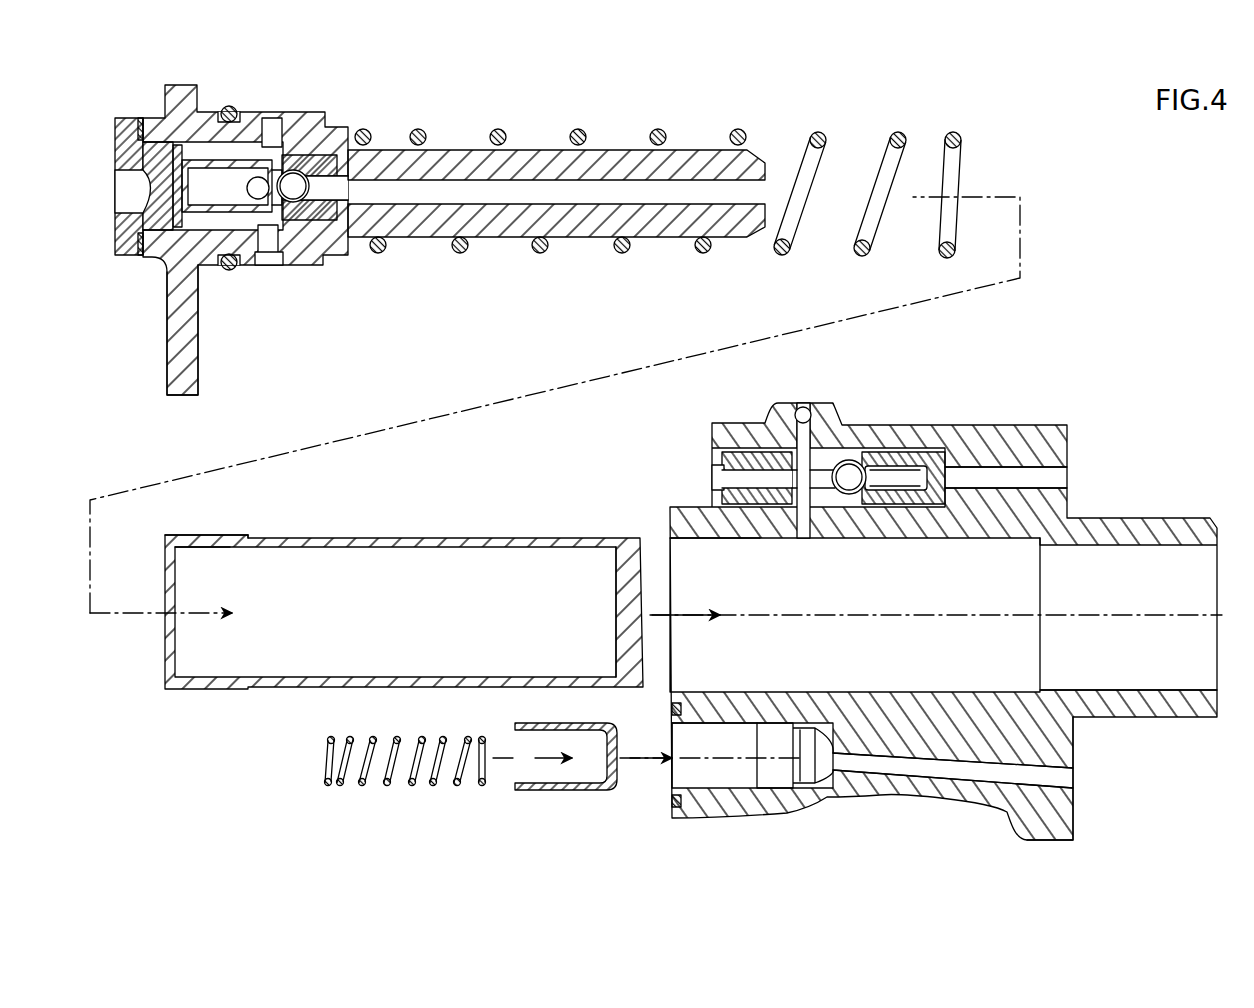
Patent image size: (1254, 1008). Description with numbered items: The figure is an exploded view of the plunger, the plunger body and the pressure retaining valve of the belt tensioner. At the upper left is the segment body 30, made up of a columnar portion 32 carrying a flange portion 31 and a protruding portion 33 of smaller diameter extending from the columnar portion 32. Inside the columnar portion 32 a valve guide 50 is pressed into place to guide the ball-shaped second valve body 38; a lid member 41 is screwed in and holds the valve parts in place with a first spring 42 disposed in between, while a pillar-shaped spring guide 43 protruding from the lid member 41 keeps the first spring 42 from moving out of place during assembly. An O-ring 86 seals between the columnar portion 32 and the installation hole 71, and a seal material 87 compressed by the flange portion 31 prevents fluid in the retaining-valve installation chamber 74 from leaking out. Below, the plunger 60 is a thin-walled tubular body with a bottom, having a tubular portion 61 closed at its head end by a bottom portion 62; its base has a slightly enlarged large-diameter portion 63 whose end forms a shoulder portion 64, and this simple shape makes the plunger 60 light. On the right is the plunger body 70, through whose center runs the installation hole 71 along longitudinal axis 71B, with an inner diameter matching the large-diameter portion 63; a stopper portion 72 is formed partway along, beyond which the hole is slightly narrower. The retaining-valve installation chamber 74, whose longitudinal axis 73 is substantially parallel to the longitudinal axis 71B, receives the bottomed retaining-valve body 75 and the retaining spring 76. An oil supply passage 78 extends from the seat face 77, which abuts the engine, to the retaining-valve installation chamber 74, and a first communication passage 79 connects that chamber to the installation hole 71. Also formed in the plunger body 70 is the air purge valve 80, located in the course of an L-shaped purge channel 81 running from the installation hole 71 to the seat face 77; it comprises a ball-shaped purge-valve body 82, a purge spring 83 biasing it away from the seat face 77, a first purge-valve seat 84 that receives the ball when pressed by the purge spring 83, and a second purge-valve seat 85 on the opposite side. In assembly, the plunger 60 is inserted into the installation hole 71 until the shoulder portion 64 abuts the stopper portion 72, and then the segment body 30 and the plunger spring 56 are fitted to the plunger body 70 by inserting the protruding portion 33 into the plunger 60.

The segment body 30 is at (472, 278).
The flange portion 31 is at (180, 398).
The columnar portion 32 is at (250, 110).
The protruding portion 33 is at (578, 240).
The second valve body 38 is at (293, 172).
The lid member 41 is at (128, 262).
The first spring 42 is at (258, 232).
The spring guide 43 is at (146, 124).
The valve guide 50 is at (315, 235).
The plunger spring 56 is at (703, 254).
The plunger 60 is at (252, 705).
The tubular portion 61 is at (373, 537).
The bottom portion 62 is at (615, 605).
The large-diameter portion 63 is at (218, 536).
The shoulder portion 64 is at (252, 545).
The plunger body 70 is at (992, 428).
The installation hole 71 is at (735, 540).
The longitudinal axis of the installation hole 71B is at (1135, 612).
The stopper portion 72 is at (1038, 540).
The longitudinal axis of the retaining-valve installation chamber 73 is at (740, 760).
The retaining-valve installation chamber 74 is at (690, 798).
The retaining-valve body 75 is at (575, 792).
The retaining spring 76 is at (410, 786).
The seat face 77 is at (1075, 822).
The oil supply passage 78 is at (912, 772).
The first communication passage 79 is at (758, 692).
The air purge valve 80 is at (884, 410).
The L-shaped purge channel 81 is at (1068, 478).
The purge-valve body 82 is at (854, 462).
The purge spring 83 is at (910, 490).
The first purge-valve seat 84 is at (838, 442).
The second purge-valve seat 85 is at (902, 468).
The O-ring 86 is at (228, 106).
The seal material 87 is at (670, 707).